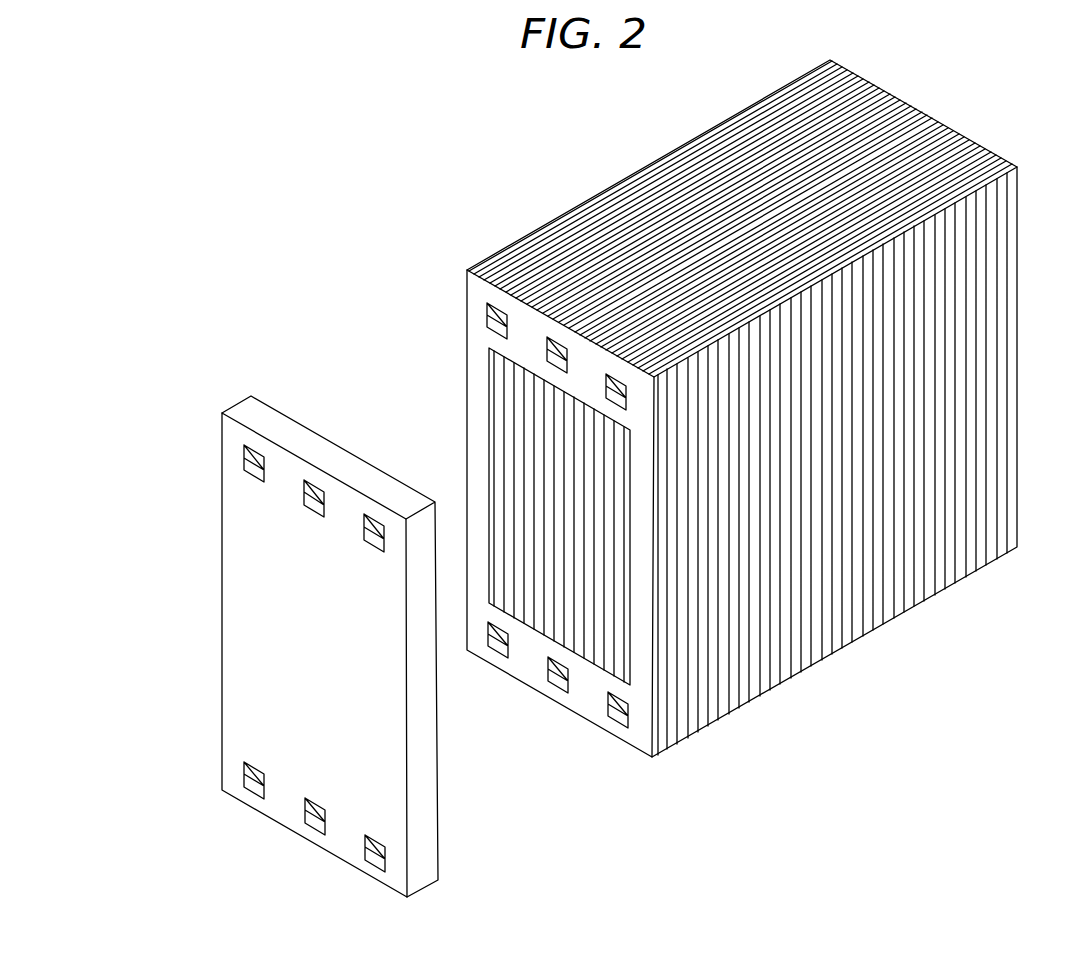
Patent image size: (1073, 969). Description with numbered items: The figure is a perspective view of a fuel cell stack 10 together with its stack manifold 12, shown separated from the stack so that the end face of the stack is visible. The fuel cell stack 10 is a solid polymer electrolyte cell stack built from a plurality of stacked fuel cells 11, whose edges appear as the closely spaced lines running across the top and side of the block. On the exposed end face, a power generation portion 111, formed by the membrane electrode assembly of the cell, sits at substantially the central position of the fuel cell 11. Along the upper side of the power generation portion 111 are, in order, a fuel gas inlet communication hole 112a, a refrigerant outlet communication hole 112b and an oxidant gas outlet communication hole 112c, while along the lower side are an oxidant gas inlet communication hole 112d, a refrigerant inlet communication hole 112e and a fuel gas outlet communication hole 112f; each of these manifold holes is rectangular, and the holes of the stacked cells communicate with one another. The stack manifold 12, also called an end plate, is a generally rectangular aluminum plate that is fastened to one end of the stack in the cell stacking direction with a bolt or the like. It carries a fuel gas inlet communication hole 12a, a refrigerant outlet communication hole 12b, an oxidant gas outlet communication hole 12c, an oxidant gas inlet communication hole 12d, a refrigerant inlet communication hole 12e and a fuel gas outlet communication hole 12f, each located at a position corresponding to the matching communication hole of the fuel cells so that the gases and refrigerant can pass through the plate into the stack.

The fuel cell stack 10 is at (651, 163).
The fuel cell 11 is at (900, 553).
The power generation portion 111 is at (540, 512).
The fuel gas inlet communication hole 112a is at (490, 320).
The refrigerant outlet communication hole 112b is at (558, 370).
The oxidant gas outlet communication hole 112c is at (612, 390).
The oxidant gas inlet communication hole 112d is at (497, 650).
The refrigerant inlet communication hole 112e is at (557, 686).
The fuel gas outlet communication hole 112f is at (618, 722).
The stack manifold 12 is at (292, 434).
The fuel gas inlet communication hole 12a is at (248, 466).
The refrigerant outlet communication hole 12b is at (313, 515).
The oxidant gas outlet communication hole 12c is at (373, 548).
The oxidant gas inlet communication hole 12d is at (252, 795).
The refrigerant inlet communication hole 12e is at (313, 830).
The fuel gas outlet communication hole 12f is at (373, 866).